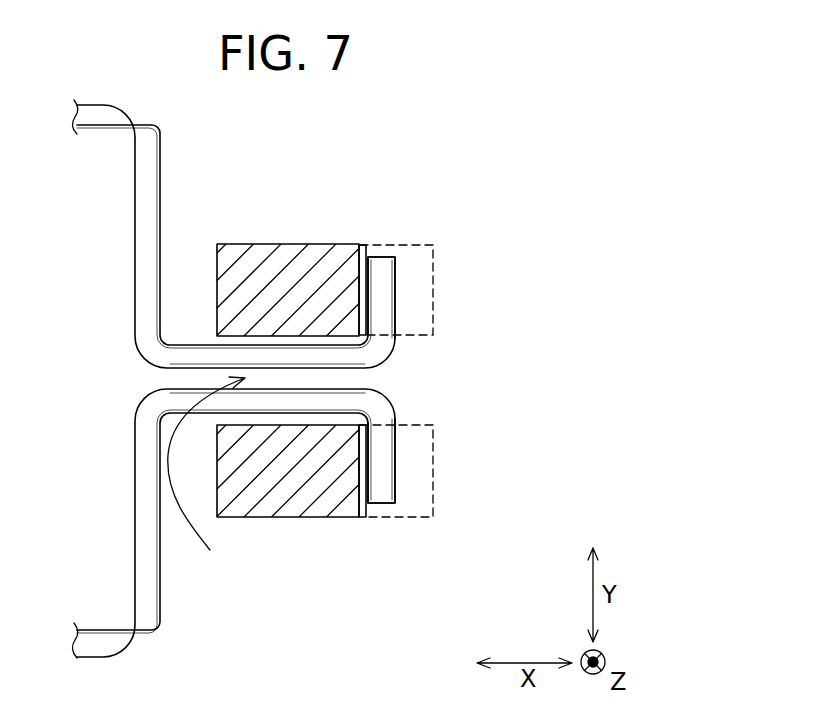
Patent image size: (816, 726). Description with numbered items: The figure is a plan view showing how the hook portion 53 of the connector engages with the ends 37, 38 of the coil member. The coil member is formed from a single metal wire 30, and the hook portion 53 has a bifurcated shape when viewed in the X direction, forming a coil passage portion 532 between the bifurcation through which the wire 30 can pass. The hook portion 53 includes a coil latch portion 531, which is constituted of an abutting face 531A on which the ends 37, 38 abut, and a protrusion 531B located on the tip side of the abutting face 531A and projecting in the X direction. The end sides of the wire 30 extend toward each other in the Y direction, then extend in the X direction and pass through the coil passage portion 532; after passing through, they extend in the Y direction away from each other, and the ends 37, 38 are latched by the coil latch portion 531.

The wire 30 is at (147, 178).
The hook portion 53 is at (268, 247).
The coil latch portion 531 is at (352, 380).
The abutting face 531A is at (361, 296).
The protrusion 531B is at (412, 244).
The end 38 is at (384, 297).
The end 37 is at (385, 463).
The coil passage portion 532 is at (206, 480).